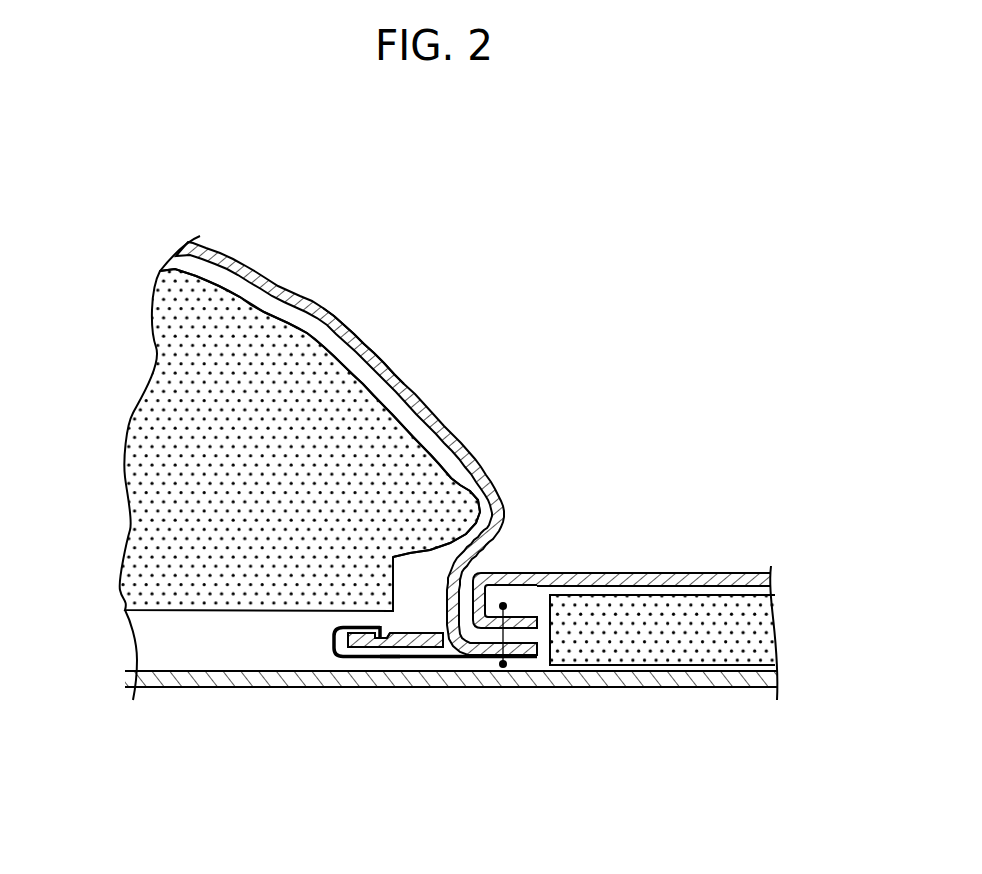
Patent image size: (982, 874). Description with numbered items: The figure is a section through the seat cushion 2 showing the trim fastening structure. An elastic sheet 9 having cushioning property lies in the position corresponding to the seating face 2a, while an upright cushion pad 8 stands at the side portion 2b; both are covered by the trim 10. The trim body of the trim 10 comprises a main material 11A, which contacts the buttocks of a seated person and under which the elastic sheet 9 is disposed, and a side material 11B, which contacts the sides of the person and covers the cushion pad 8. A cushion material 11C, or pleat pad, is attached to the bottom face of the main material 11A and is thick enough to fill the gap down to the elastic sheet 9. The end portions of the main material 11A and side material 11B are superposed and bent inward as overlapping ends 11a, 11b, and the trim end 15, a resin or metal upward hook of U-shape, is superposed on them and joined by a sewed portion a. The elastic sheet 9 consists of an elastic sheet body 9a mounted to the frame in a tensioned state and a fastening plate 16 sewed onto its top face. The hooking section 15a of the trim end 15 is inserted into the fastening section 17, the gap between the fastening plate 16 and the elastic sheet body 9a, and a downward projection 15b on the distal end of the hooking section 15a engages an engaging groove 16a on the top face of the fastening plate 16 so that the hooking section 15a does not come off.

The seat cushion 2 is at (326, 302).
The seating face 2a is at (615, 575).
The side portion 2b is at (400, 378).
The cushion pad 8 is at (178, 495).
The elastic sheet 9 is at (613, 697).
The elastic sheet body 9a is at (243, 680).
The trim 10 is at (756, 554).
The main material 11A is at (555, 575).
The side material 11B is at (372, 352).
The cushion material 11C is at (687, 618).
The overlapping end 11a is at (518, 617).
The overlapping end 11b is at (491, 656).
The trim end 15 is at (413, 660).
The hooking section 15a is at (345, 622).
The projection 15b is at (385, 626).
The fastening plate 16 is at (352, 657).
The engaging groove 16a is at (378, 649).
The fastening section 17 is at (394, 669).
The sewed portion a is at (503, 605).